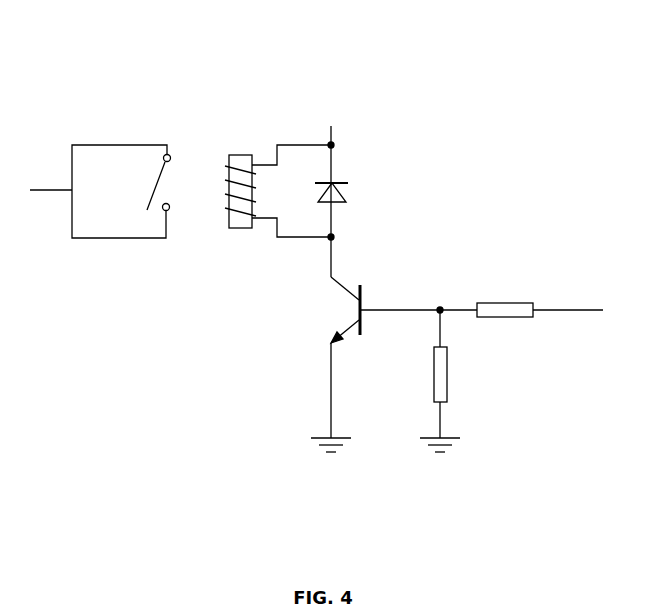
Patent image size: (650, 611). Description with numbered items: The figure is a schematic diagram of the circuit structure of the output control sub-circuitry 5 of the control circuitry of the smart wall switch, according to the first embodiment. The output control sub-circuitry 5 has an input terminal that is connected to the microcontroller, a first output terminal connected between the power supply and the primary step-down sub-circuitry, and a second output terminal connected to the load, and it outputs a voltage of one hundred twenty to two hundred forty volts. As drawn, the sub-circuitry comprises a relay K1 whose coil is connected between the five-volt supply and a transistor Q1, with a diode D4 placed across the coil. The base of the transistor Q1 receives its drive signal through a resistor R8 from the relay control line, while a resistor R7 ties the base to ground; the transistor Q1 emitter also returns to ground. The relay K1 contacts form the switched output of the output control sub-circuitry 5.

The output control sub-circuitry 5 is at (300, 48).
The relay K1 is at (180, 191).
The diode D4 is at (338, 189).
The transistor Q1 is at (362, 357).
The resistor R7 is at (450, 372).
The resistor R8 is at (521, 310).